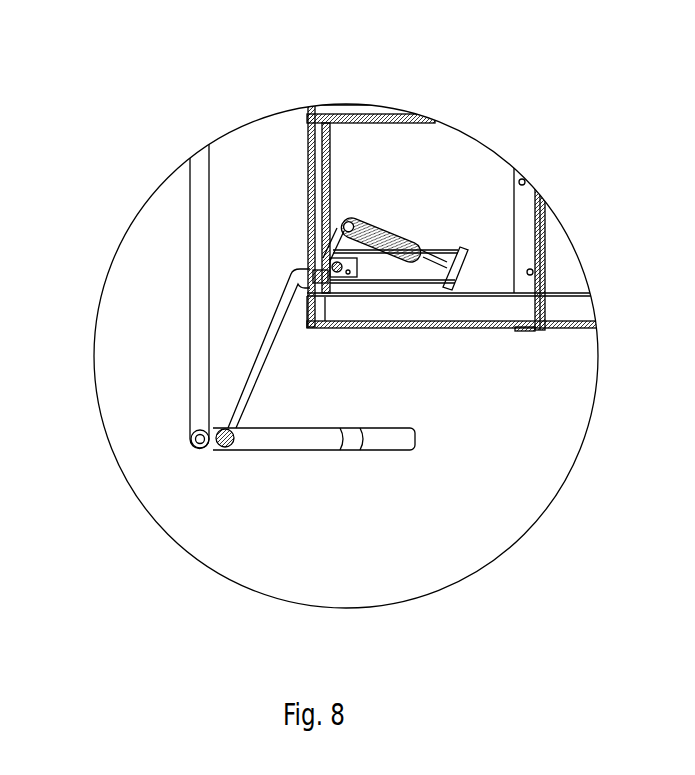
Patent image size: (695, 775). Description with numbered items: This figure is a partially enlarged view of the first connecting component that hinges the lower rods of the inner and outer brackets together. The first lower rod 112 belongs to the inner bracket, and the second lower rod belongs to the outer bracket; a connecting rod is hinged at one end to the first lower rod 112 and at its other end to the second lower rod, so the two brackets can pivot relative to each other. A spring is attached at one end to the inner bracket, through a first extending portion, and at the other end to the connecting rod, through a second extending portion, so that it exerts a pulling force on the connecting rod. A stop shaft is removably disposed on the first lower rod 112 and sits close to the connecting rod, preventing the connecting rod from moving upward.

The first lower rod 112 is at (408, 310).